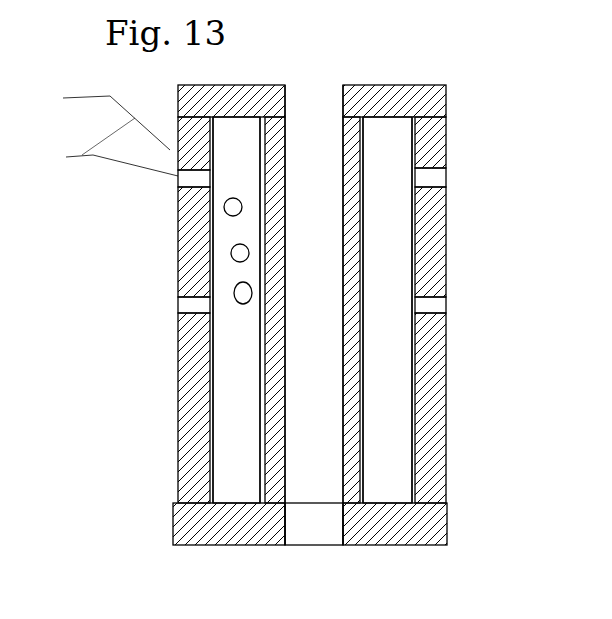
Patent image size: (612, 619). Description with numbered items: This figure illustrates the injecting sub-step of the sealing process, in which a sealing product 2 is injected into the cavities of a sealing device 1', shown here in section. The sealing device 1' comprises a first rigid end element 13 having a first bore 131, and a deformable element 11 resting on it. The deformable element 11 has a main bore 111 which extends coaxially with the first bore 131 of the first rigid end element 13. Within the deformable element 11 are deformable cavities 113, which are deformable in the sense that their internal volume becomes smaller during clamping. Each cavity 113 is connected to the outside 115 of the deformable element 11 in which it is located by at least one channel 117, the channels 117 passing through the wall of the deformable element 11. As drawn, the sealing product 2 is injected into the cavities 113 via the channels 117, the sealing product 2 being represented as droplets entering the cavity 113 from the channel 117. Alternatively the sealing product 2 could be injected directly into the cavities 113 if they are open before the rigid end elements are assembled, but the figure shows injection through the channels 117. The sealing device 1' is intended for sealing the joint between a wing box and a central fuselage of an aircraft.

The sealing device 1' is at (515, 93).
The sealing product 2 is at (230, 212).
The deformable element 11 is at (265, 352).
The first rigid end element 13 is at (185, 520).
The main bore 111 is at (313, 487).
The deformable cavity 113 is at (232, 443).
The outside 115 is at (178, 410).
The channel 117 is at (178, 185).
The first bore 131 is at (300, 540).